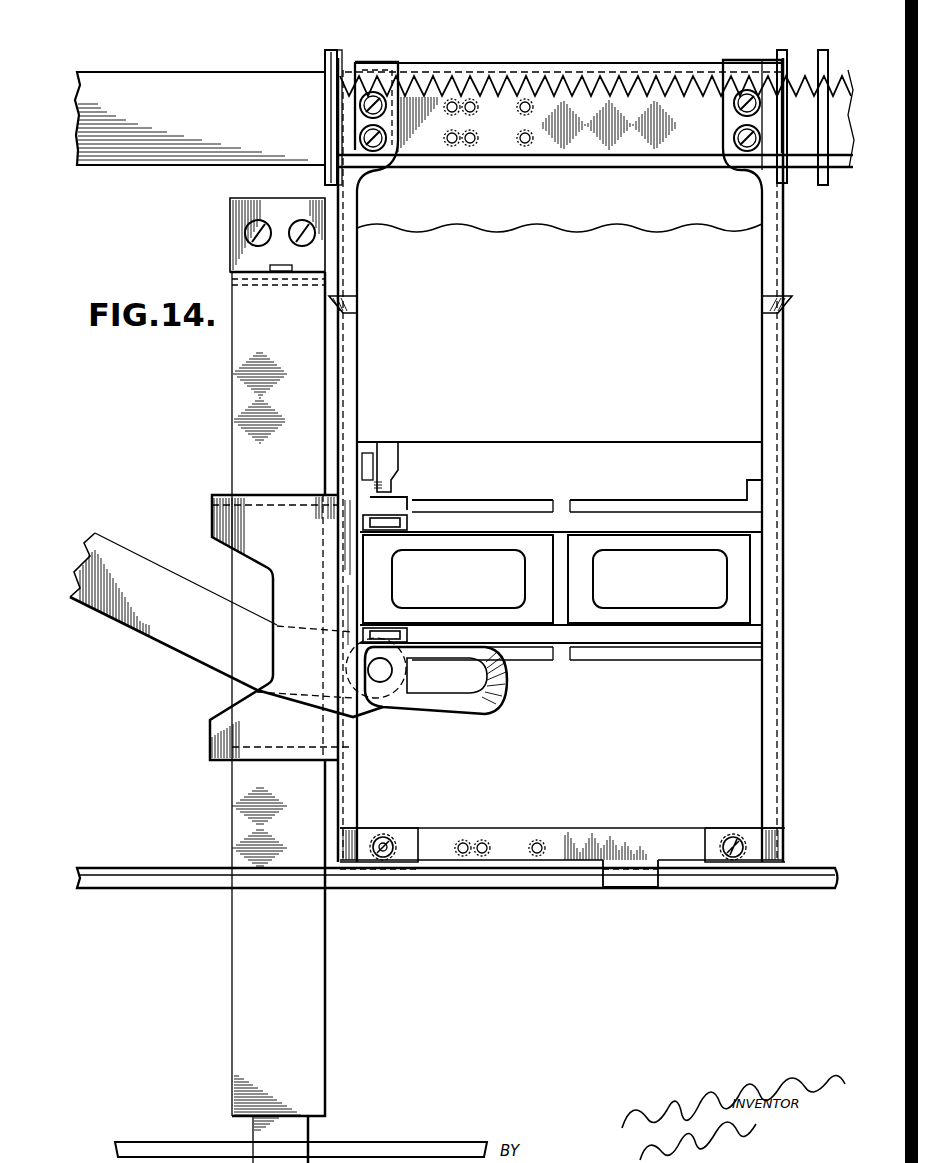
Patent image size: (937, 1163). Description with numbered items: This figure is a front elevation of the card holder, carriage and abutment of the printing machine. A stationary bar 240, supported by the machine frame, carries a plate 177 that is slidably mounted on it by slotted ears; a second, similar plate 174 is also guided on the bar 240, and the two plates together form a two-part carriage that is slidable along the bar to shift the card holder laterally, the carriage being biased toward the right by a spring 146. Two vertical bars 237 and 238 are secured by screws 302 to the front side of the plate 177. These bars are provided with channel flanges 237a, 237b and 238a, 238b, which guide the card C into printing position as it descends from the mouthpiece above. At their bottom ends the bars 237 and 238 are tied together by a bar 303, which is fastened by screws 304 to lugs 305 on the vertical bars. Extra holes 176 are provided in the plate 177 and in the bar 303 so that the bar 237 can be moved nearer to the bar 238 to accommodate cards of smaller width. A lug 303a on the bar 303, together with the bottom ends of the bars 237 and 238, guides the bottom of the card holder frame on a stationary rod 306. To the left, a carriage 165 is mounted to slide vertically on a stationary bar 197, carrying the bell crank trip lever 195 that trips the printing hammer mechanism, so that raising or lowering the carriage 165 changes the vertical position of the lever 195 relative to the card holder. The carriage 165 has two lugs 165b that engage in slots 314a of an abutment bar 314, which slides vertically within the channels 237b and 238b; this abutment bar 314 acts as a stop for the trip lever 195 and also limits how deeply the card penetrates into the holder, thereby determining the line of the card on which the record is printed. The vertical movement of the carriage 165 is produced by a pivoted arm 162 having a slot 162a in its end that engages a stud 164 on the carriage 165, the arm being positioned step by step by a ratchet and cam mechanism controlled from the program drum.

The stationary bar 240 is at (148, 84).
The second plate 174 is at (325, 56).
The plate 177 is at (339, 58).
The spring 146 is at (618, 86).
The extra holes 176 is at (525, 100).
The screws 302 is at (382, 92).
The channel flange 237a is at (380, 118).
The channel flange 238a is at (747, 120).
The vertical bar 237 is at (350, 198).
The vertical bar 238 is at (772, 203).
The channel flange 237b is at (350, 342).
The channel flange 238b is at (770, 323).
The card C is at (740, 360).
The stationary bar 197 is at (240, 390).
The bell crank lever 195 is at (395, 460).
The lugs 165b is at (413, 520).
The slots 314a is at (492, 520).
The abutment bar 314 is at (655, 500).
The carriage 165 is at (257, 527).
The arm 162 is at (145, 605).
The slot 162a is at (462, 688).
The stud 164 is at (380, 684).
The bar 303 is at (628, 828).
The lug 303a is at (631, 880).
The lugs 305 is at (405, 827).
The screws 304 is at (385, 855).
The stationary rod 306 is at (512, 878).